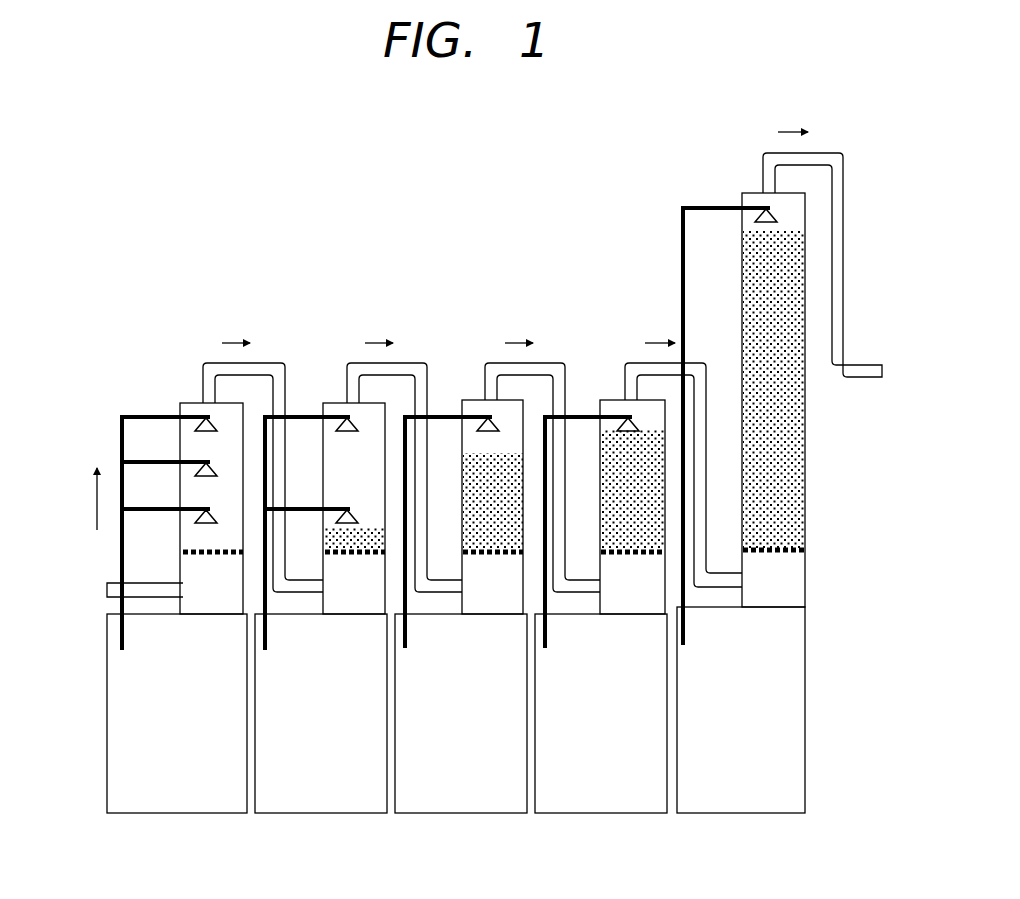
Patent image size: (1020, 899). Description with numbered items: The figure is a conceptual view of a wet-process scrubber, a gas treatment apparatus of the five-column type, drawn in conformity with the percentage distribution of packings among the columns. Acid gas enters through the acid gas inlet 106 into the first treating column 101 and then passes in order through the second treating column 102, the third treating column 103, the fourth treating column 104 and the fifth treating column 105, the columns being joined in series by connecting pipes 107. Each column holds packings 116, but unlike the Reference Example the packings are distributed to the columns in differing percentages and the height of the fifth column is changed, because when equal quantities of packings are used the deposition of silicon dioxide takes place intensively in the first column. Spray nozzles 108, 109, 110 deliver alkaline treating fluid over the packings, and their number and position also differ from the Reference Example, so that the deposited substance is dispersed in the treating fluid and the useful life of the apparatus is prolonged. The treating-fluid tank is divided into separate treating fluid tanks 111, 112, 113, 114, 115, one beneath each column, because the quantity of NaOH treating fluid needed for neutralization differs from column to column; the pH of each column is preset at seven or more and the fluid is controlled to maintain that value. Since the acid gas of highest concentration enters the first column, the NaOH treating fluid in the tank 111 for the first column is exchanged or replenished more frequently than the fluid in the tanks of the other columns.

The first treating column 101 is at (190, 402).
The second treating column 102 is at (331, 402).
The third treating column 103 is at (470, 399).
The fourth treating column 104 is at (612, 399).
The fifth treating column 105 is at (752, 192).
The acid gas inlet 106 is at (107, 588).
The connecting pipes 107 is at (270, 362).
The spray nozzle 108 is at (495, 418).
The spray nozzle 109 is at (632, 418).
The spray nozzle 110 is at (772, 210).
The treating fluid tank 111 is at (210, 813).
The treating fluid tank 112 is at (353, 813).
The treating fluid tank 113 is at (493, 813).
The treating fluid tank 114 is at (633, 813).
The treating fluid tank 115 is at (773, 813).
The packings 116 is at (800, 243).